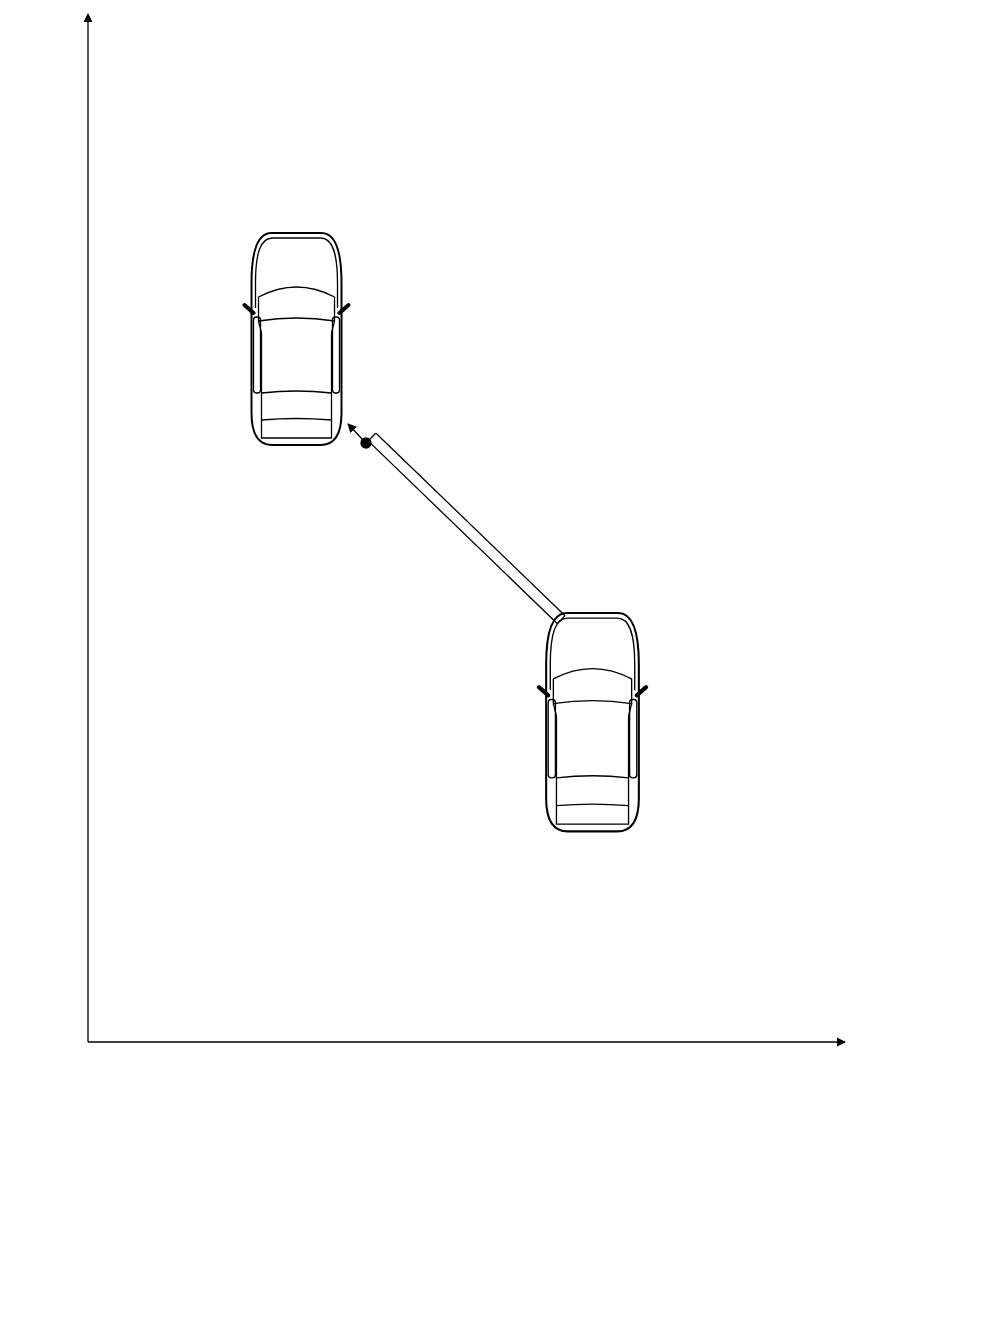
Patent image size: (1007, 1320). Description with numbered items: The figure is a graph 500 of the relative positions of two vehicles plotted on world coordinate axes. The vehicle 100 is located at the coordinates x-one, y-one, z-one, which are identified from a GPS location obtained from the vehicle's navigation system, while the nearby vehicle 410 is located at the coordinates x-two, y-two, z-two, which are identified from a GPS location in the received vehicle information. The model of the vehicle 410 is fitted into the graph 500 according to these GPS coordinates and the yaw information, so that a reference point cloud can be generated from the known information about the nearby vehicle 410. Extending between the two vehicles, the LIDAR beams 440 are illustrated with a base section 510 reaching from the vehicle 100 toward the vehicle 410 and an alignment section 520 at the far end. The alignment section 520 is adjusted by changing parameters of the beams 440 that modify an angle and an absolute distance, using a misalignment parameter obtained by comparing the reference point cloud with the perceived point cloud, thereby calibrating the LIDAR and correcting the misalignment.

The graph 500 is at (670, 133).
The vehicle 410 is at (297, 339).
The vehicle 100 is at (592, 722).
The LIDAR beams 440 is at (427, 531).
The base section 510 is at (455, 497).
The alignment section 520 is at (355, 413).